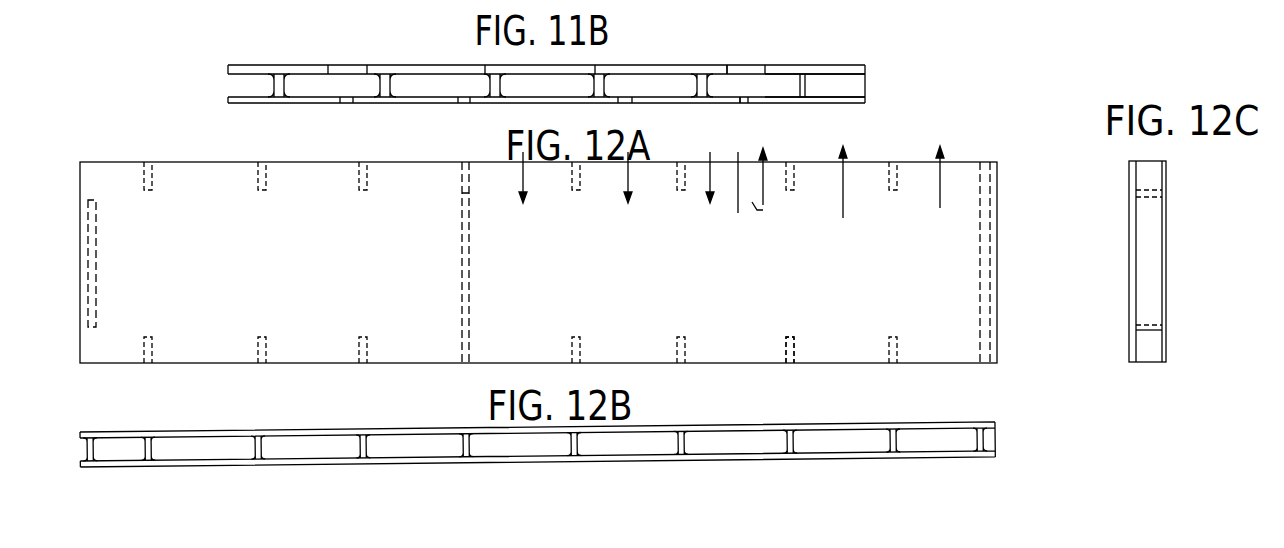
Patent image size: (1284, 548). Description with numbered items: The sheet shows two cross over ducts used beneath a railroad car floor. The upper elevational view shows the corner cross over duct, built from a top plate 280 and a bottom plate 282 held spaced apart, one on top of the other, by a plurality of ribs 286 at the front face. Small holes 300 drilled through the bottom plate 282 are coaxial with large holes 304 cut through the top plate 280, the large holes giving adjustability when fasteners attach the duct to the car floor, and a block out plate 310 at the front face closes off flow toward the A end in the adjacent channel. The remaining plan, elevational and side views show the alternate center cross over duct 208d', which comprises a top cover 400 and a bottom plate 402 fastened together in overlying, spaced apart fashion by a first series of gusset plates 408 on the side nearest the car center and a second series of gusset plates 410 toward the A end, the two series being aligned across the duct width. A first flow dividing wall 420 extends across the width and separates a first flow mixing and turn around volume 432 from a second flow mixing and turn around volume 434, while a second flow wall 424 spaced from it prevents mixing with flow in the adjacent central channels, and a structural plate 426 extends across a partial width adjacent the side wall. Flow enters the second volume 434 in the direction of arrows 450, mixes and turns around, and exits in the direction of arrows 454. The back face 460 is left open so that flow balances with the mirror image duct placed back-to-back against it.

In FIG. 11B, the top plate 280 is at (797, 64).
In FIG. 11B, the bottom plate 282 is at (783, 104).
In FIG. 11B, the ribs 286 is at (286, 86).
In FIG. 11B, the large holes 304 is at (735, 66).
In FIG. 11B, the small holes 300 is at (742, 104).
In FIG. 11B, the block out plate 310 is at (850, 84).
In FIG. 12A, the center cross over duct 208d' is at (538, 233).
In FIG. 12A, the structural plate 426 is at (92, 268).
In FIG. 12B, the structural plate 426 is at (90, 451).
In FIG. 12A, the second flow wall 424 is at (990, 173).
In FIG. 12B, the second flow wall 424 is at (990, 447).
In FIG. 12C, the second flow wall 424 is at (1143, 256).
In FIG. 12A, the first flow dividing wall 420 is at (462, 250).
In FIG. 12A, the second series of gusset plates 410 is at (252, 183).
In FIG. 12C, the second series of gusset plates 410 is at (1148, 182).
In FIG. 12A, the first series of gusset plates 408 is at (152, 347).
In FIG. 12B, the first series of gusset plates 408 is at (795, 452).
In FIG. 12C, the first series of gusset plates 408 is at (1150, 350).
In FIG. 12A, the back face 460 is at (794, 350).
In FIG. 12A, the first flow mixing and turn around volume 432 is at (192, 250).
In FIG. 12B, the first flow mixing and turn around volume 432 is at (318, 442).
In FIG. 12A, the second flow mixing and turn around volume 434 is at (935, 255).
In FIG. 12B, the second flow mixing and turn around volume 434 is at (733, 438).
In FIG. 12A, the flow arrows 450 is at (527, 173).
In FIG. 12A, the flow arrows 454 is at (767, 176).
In FIG. 12C, the top cover 400 is at (1129, 224).
In FIG. 12C, the bottom plate 402 is at (1168, 220).